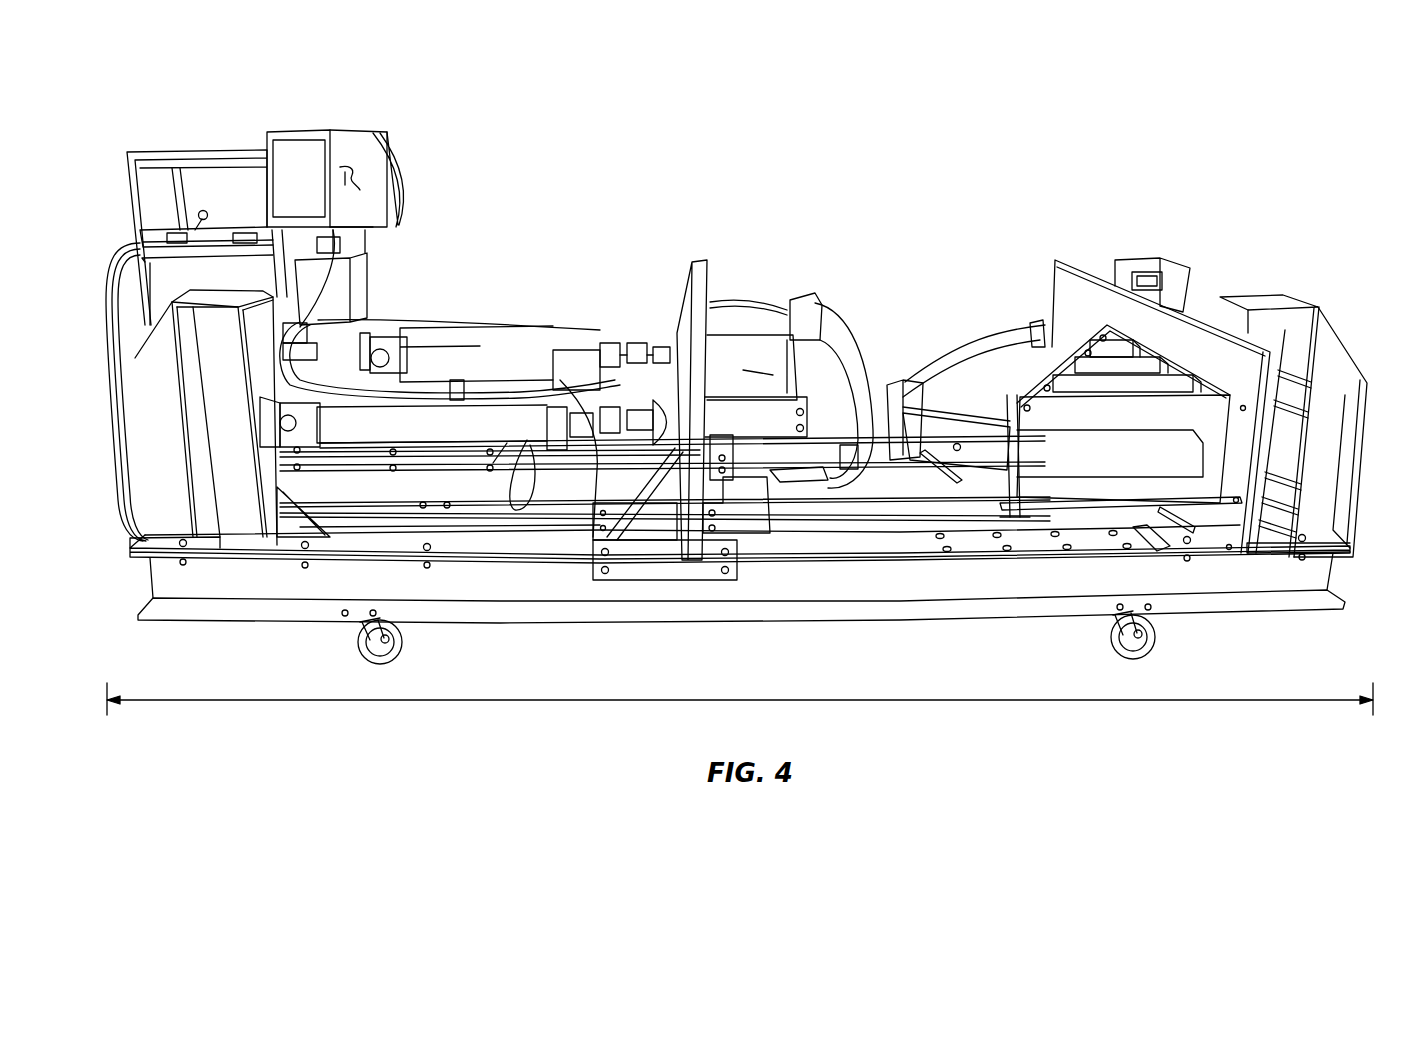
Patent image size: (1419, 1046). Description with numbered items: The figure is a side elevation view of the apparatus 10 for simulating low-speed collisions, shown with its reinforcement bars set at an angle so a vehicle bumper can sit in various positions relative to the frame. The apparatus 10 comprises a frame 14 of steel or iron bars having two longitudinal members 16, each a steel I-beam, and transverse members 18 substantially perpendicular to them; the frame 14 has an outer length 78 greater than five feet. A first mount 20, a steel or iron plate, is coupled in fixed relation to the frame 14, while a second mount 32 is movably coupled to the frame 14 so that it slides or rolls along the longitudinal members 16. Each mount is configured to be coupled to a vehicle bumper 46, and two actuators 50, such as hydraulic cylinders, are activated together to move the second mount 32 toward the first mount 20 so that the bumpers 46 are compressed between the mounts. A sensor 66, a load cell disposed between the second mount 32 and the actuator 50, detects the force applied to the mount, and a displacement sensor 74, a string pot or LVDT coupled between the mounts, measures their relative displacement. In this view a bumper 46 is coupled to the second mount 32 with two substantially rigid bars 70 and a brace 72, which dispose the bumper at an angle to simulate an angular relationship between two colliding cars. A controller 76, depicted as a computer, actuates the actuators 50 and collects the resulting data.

The apparatus 10 is at (992, 152).
The frame 14 is at (960, 645).
The longitudinal members 16 is at (555, 587).
The transverse members 18 is at (757, 525).
The first mount 20 is at (1110, 255).
The second mount 32 is at (695, 250).
The vehicle bumper 46 is at (815, 303).
The actuator 50 is at (448, 337).
The sensor 66 is at (668, 392).
The bar 70 is at (735, 333).
The brace 72 is at (1148, 352).
The displacement sensor 74 is at (570, 352).
The controller 76 is at (237, 185).
The length 78 is at (720, 701).